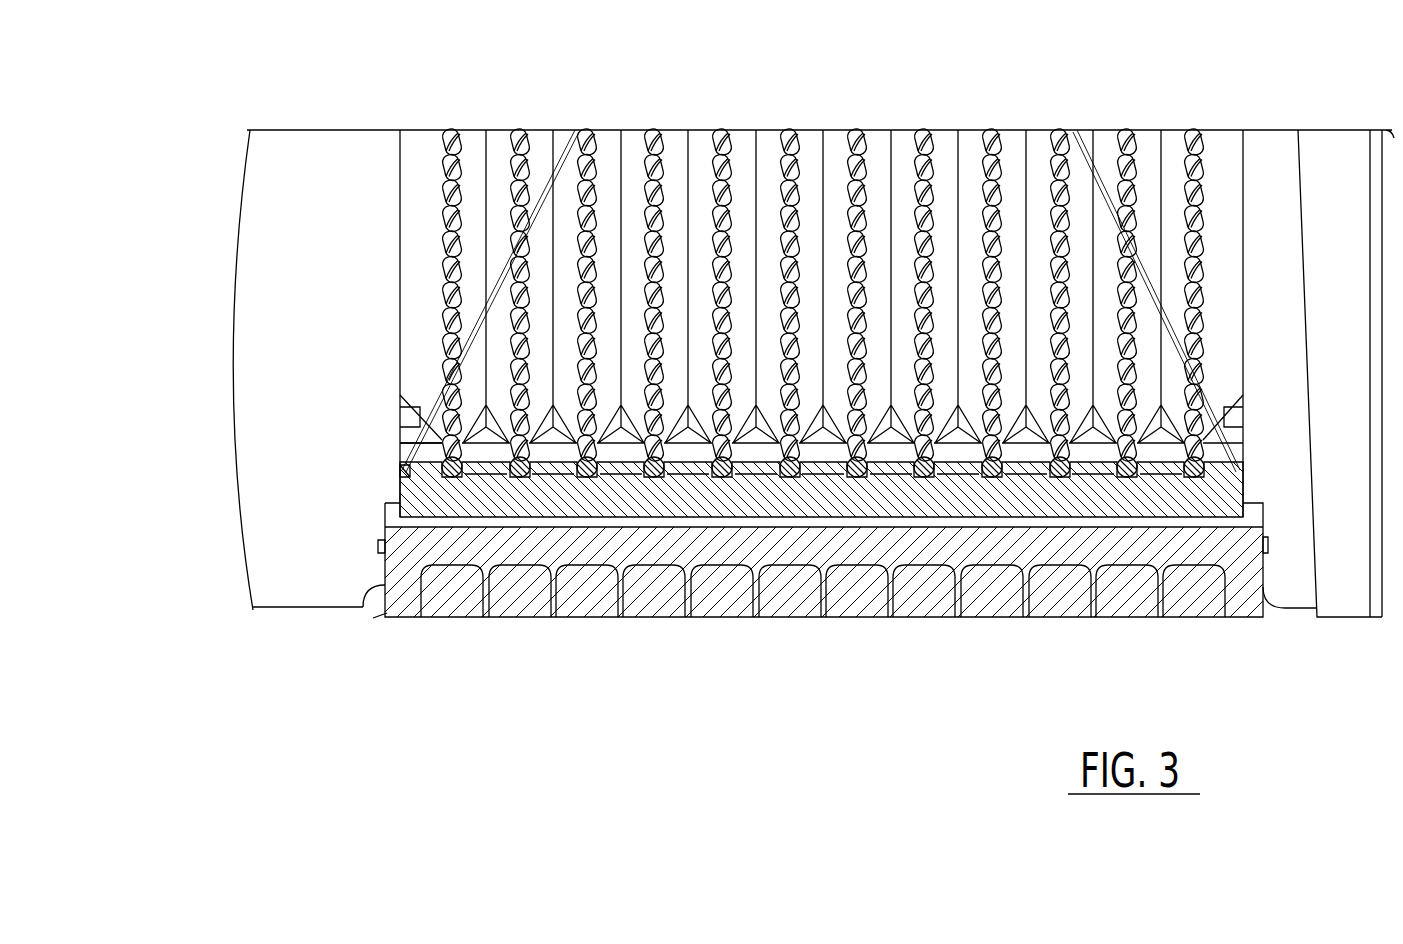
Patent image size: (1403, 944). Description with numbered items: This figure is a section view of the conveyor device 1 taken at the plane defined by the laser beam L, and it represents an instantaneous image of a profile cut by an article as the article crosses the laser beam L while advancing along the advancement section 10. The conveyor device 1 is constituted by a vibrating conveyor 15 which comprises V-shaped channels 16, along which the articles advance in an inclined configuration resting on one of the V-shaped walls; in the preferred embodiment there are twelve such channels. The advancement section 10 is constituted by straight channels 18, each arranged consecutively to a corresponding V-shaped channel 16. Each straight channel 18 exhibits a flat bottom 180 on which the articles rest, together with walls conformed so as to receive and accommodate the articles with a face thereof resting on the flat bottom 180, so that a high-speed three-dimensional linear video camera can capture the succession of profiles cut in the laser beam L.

The conveyor device 1 is at (307, 316).
The vibrating conveyor 15 is at (398, 322).
The V-shaped channel 16 is at (410, 213).
The laser beam L is at (430, 452).
The advancement section 10 is at (392, 468).
The straight channel 18 is at (448, 470).
The flat bottom 180 is at (400, 480).